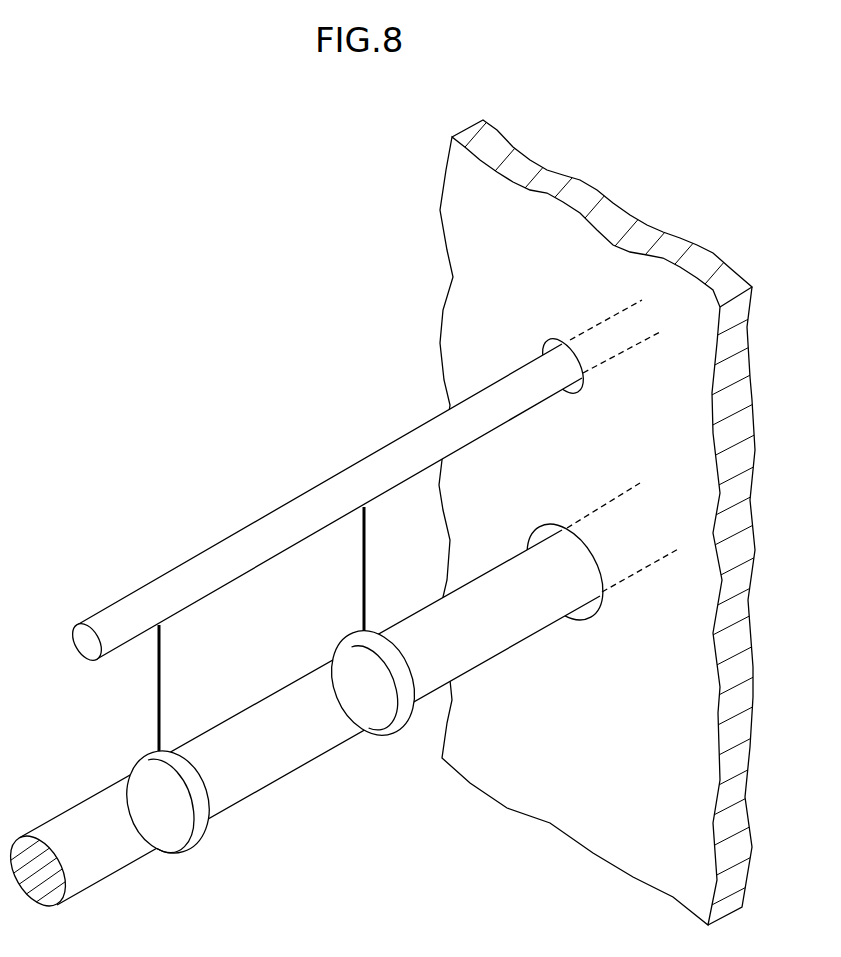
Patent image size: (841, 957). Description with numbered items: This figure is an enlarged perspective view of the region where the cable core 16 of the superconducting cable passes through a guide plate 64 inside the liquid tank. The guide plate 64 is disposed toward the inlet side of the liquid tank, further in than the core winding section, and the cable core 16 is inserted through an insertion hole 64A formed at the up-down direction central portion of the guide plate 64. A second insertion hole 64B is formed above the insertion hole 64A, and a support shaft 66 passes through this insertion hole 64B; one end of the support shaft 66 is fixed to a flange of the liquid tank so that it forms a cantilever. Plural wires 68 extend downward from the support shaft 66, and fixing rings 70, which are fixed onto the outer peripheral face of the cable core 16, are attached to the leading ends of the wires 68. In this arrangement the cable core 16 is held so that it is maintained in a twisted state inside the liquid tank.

The cable core 16 is at (300, 769).
The guide plate 64 is at (548, 820).
The insertion hole 64A is at (596, 618).
The insertion hole 64B is at (537, 360).
The support shaft 66 is at (293, 500).
The wires 68 is at (158, 705).
The fixing rings 70 is at (194, 856).